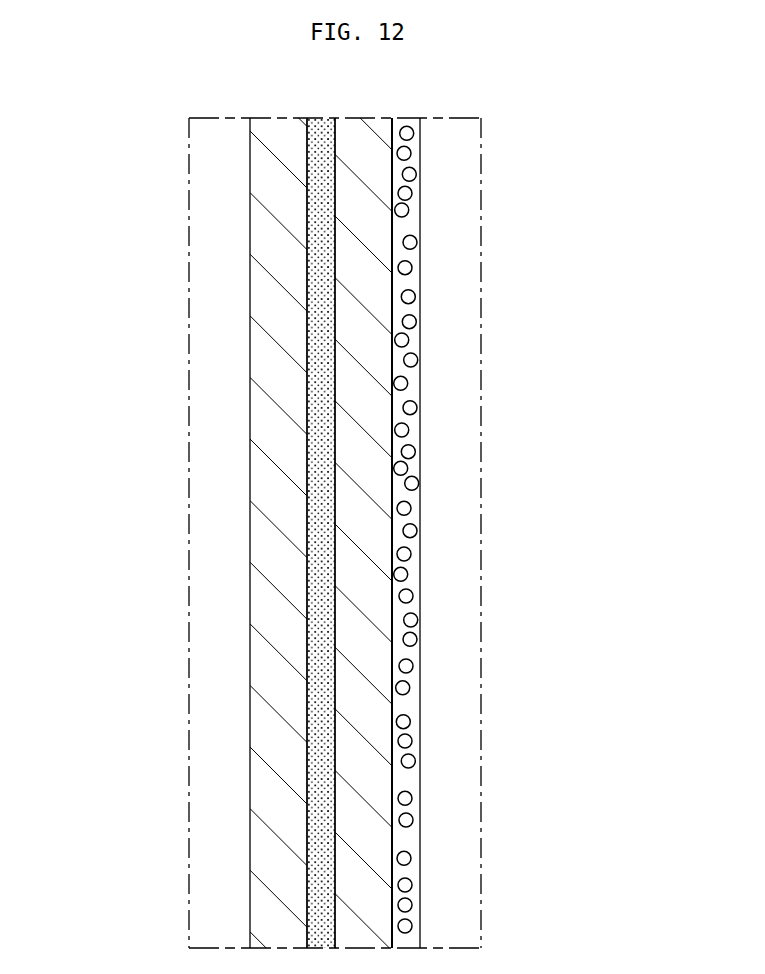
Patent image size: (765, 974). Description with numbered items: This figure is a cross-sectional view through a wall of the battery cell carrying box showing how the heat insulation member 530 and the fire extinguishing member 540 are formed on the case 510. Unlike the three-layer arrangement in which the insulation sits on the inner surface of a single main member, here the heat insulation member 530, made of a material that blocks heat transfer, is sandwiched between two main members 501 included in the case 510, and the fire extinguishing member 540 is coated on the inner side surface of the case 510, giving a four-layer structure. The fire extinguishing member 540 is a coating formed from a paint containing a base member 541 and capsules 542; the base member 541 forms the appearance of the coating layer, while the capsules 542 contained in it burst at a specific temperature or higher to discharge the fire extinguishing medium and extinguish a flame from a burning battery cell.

The main member 501 is at (222, 491).
The case 510 is at (250, 292).
The heat insulation member 530 is at (307, 507).
The fire extinguishing member 540 is at (541, 533).
The base member 541 is at (408, 225).
The capsules 542 is at (407, 297).